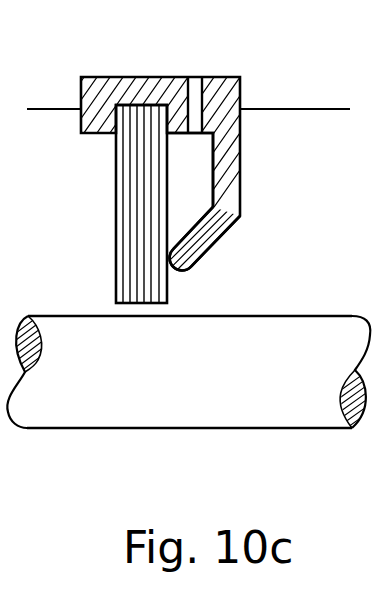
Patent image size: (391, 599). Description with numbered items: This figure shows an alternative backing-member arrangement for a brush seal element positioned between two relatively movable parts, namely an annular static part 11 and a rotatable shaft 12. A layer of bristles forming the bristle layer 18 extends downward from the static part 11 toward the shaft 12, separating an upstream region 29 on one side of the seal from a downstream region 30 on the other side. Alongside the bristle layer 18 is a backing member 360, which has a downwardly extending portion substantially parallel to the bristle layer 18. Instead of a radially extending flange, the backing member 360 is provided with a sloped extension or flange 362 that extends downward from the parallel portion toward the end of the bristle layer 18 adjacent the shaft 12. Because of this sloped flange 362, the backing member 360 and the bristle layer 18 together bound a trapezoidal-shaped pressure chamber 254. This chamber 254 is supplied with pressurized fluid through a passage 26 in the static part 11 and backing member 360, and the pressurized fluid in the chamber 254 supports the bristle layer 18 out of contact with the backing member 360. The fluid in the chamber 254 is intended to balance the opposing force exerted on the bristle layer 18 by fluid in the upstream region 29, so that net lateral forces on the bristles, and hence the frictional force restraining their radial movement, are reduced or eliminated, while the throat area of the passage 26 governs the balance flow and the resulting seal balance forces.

The static part 11 is at (98, 82).
The passage 26 is at (194, 82).
The pressure chamber 254 is at (183, 157).
The backing member 360 is at (227, 186).
The sloped extension or flange 362 is at (218, 228).
The bristle layer 18 is at (117, 208).
The upstream region 29 is at (43, 262).
The downstream region 30 is at (305, 296).
The rotatable shaft 12 is at (230, 422).